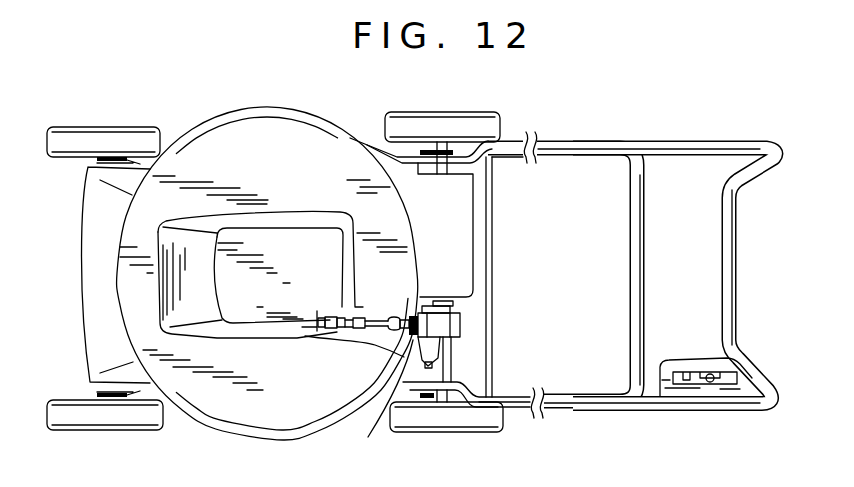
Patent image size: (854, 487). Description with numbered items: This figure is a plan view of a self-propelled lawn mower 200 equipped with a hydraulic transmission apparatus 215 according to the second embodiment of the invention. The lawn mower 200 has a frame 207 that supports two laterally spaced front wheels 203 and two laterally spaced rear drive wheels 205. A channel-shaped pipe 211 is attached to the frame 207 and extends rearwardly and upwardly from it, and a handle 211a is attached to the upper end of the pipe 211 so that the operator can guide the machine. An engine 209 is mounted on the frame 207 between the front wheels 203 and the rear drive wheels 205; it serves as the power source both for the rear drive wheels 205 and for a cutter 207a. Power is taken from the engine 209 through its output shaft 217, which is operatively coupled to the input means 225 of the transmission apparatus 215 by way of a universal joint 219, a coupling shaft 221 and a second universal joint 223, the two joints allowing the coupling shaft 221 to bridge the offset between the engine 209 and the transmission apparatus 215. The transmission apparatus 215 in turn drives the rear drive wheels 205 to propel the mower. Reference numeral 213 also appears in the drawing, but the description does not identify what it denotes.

The lawn mower 200 is at (585, 92).
The front wheels 203 is at (120, 137).
The rear drive wheels 205 is at (425, 124).
The frame 207 is at (218, 104).
The cutter 207a is at (283, 133).
The engine 209 is at (282, 236).
The channel-shaped pipe 211 is at (568, 152).
The handle 211a is at (727, 270).
The control rod 213 is at (452, 363).
The hydraulic transmission apparatus 215 is at (475, 326).
The output shaft 217 is at (319, 326).
The universal joint 219 is at (348, 330).
The coupling shaft 221 is at (372, 318).
The universal joint 223 is at (413, 314).
The input means 225 is at (377, 400).